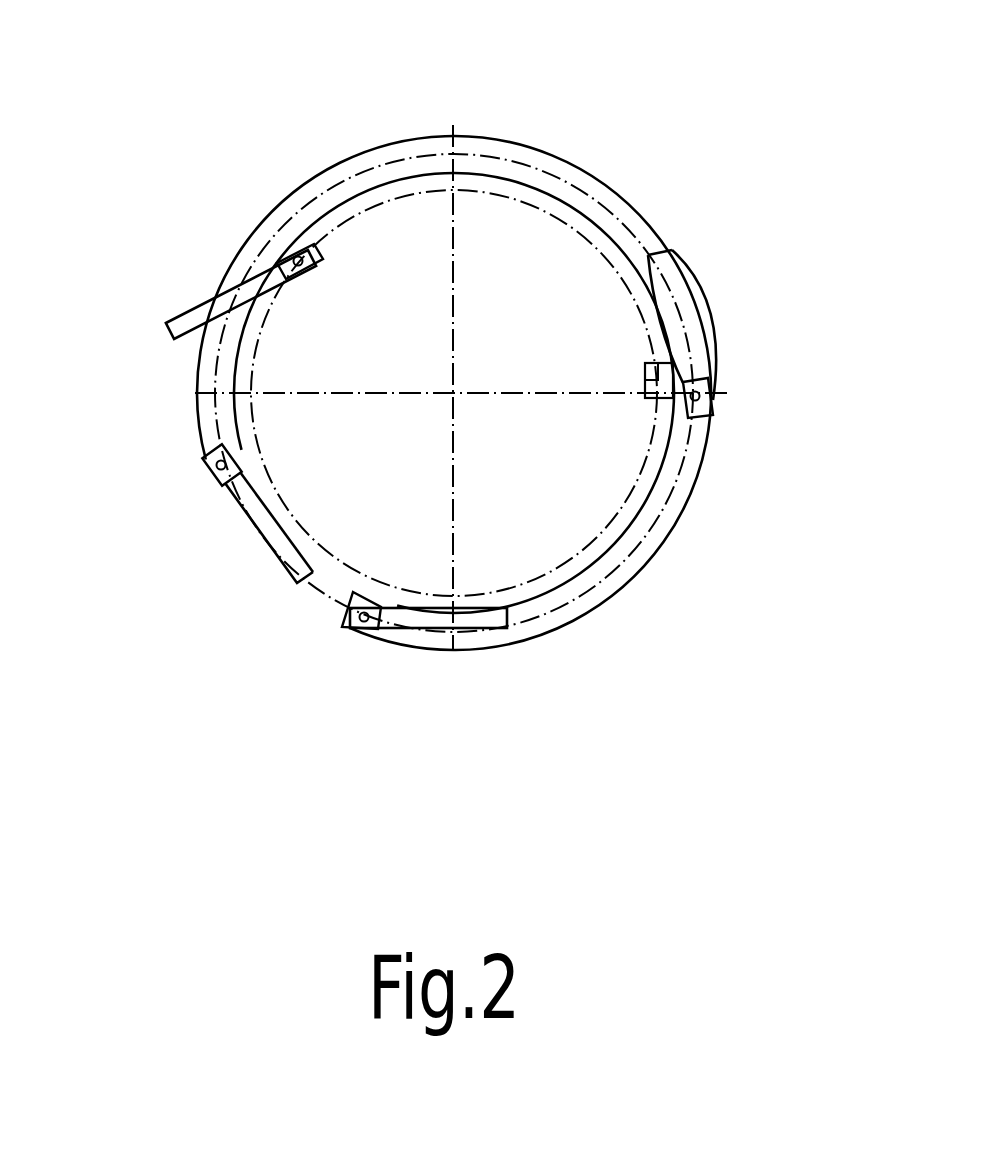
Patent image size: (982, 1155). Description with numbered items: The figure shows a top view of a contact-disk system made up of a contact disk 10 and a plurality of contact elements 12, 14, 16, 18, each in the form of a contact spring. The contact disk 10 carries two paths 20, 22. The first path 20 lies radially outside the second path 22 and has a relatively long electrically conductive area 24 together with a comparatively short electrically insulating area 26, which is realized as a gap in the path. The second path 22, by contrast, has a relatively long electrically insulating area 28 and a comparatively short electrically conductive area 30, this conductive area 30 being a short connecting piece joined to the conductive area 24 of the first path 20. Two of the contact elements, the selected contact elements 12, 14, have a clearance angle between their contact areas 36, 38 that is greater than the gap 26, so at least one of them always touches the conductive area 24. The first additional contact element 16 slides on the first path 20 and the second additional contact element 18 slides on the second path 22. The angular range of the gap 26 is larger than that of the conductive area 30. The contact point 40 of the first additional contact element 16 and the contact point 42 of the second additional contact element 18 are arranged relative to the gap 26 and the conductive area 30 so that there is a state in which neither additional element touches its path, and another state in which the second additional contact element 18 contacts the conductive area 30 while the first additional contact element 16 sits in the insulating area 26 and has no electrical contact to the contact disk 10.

The contact disk 10 is at (552, 635).
The selected contact element 12 is at (282, 533).
The selected contact element 14 is at (410, 600).
The first additional contact element 16 is at (683, 347).
The second additional contact element 18 is at (192, 315).
The first path 20 is at (645, 537).
The second path 22 is at (585, 226).
The electrically conductive area 24 is at (682, 465).
The electrically insulating area 26 is at (348, 593).
The electrically insulating area 28 is at (453, 190).
The electrically conductive area 30 is at (640, 376).
The contact area 36 is at (205, 470).
The contact area 38 is at (362, 633).
The contact point 40 is at (712, 393).
The contact point 42 is at (298, 270).